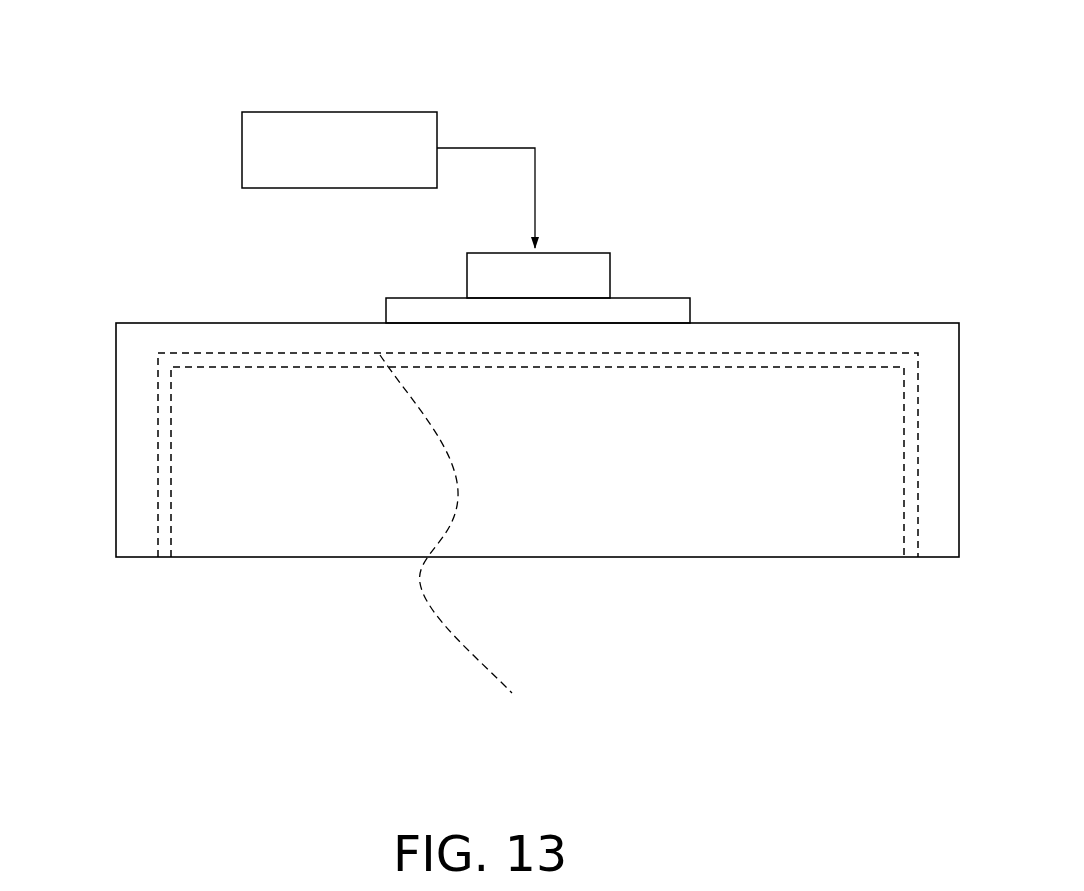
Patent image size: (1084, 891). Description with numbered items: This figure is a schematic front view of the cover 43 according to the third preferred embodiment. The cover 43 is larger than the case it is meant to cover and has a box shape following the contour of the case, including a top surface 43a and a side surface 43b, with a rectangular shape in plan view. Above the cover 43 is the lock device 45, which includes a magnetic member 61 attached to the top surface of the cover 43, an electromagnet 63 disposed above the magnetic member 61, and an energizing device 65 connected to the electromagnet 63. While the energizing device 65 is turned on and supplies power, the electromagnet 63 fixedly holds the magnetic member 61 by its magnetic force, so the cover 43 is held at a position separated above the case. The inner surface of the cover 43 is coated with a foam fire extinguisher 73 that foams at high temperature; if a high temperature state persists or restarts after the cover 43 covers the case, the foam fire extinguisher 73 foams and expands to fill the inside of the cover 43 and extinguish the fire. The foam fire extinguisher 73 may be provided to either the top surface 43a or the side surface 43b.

The cover 43 is at (826, 302).
The top surface 43a is at (228, 340).
The side surface 43b is at (143, 475).
The lock device 45 is at (604, 164).
The magnetic member 61 is at (680, 311).
The electromagnet 63 is at (600, 268).
The energizing device 65 is at (363, 112).
The foam fire extinguisher 73 is at (461, 541).